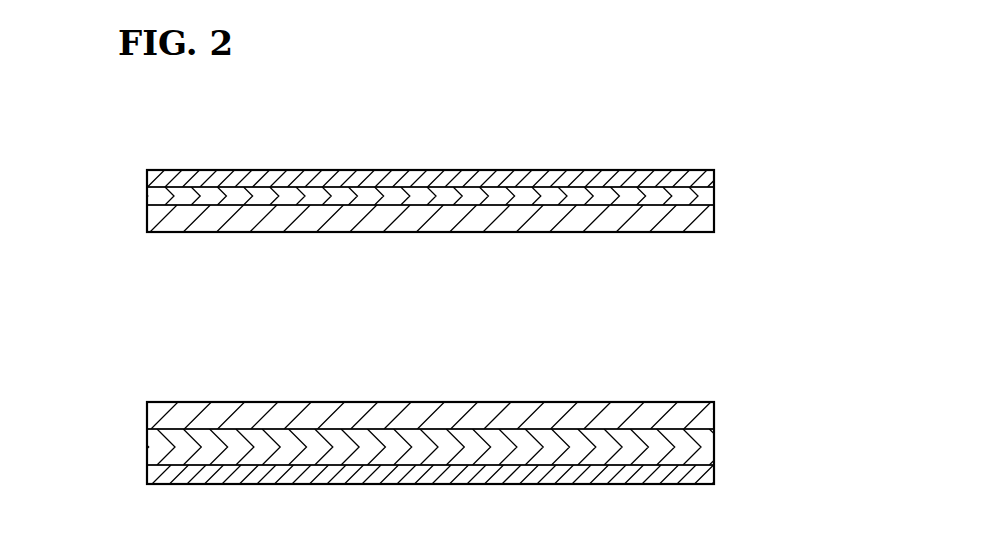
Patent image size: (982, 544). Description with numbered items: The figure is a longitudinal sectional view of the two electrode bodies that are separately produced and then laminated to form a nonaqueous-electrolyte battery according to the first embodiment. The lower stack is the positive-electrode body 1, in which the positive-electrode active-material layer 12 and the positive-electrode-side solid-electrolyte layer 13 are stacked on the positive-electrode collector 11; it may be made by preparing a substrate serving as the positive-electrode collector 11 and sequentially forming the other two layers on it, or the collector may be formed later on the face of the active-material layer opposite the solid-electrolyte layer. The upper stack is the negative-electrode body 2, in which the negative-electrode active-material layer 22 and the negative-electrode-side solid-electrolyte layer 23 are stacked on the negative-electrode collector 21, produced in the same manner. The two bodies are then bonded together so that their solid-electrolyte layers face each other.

The positive-electrode body 1 is at (745, 435).
The positive-electrode collector 11 is at (147, 476).
The positive-electrode active-material layer 12 is at (147, 443).
The positive-electrode-side solid-electrolyte layer 13 is at (147, 413).
The negative-electrode body 2 is at (740, 197).
The negative-electrode collector 21 is at (147, 177).
The negative-electrode active-material layer 22 is at (147, 198).
The negative-electrode-side solid-electrolyte layer 23 is at (147, 220).